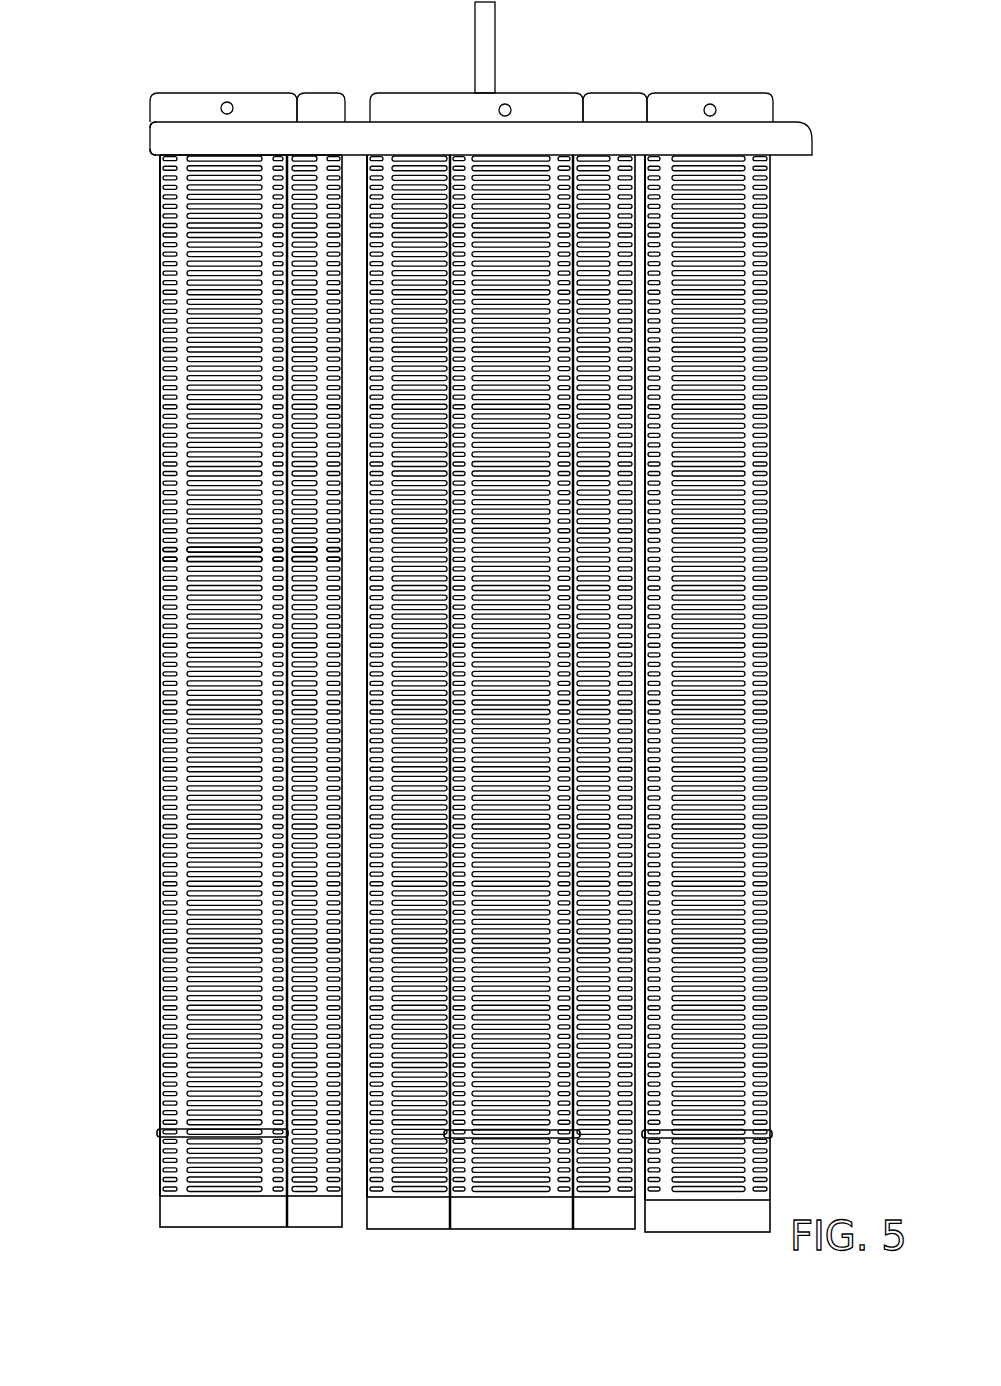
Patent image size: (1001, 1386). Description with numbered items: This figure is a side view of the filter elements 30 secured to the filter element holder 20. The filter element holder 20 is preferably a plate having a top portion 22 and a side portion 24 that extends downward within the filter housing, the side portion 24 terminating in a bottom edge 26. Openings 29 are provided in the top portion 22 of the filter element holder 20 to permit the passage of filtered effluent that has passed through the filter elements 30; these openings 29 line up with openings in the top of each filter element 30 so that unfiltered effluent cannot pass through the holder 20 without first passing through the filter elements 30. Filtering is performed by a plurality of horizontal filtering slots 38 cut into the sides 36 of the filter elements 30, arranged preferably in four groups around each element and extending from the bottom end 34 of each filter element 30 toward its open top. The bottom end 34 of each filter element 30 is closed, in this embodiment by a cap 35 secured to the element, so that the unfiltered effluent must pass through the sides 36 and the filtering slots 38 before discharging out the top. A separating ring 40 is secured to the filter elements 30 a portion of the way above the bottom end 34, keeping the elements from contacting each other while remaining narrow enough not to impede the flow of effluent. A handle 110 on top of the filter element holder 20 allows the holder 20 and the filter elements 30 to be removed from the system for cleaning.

The handle 110 is at (490, 38).
The filter element holder 20 is at (795, 135).
The top portion 22 is at (742, 93).
The side portion 24 is at (138, 130).
The bottom edge 26 is at (152, 161).
The openings 29 is at (177, 98).
The filter elements 30 is at (395, 691).
The bottom end 34 is at (770, 1200).
The cap 35 is at (180, 1215).
The sides 36 is at (148, 380).
The horizontal filtering slots 38 is at (198, 561).
The separating ring 40 is at (157, 1133).